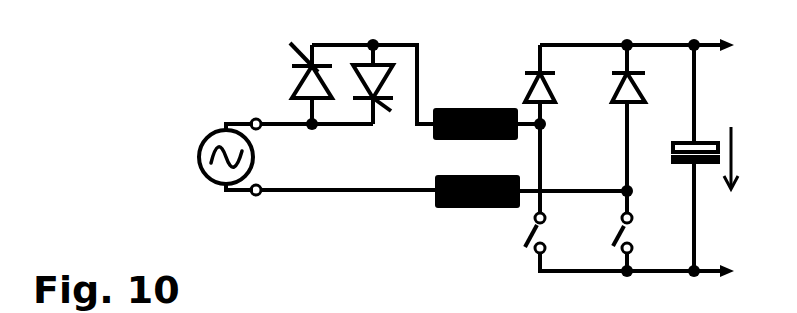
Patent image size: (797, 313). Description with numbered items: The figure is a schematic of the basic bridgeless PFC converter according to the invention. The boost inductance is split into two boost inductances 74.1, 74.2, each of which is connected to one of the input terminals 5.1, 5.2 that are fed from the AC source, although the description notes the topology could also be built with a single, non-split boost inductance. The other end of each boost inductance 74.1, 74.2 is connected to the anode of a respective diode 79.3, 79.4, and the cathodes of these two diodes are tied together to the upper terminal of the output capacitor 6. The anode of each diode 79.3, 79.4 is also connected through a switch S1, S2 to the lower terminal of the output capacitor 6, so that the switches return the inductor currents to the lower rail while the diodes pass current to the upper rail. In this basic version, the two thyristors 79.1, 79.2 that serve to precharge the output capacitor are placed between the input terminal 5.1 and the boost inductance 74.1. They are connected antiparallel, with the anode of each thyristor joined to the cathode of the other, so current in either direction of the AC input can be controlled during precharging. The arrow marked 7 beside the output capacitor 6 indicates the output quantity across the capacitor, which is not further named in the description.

The input terminal 5.1 is at (248, 117).
The input terminal 5.2 is at (250, 197).
The thyristor 79.1 is at (293, 88).
The thyristor 79.2 is at (368, 65).
The diode 79.3 is at (530, 85).
The diode 79.4 is at (640, 88).
The boost inductance 74.1 is at (488, 110).
The boost inductance 74.2 is at (508, 175).
The output capacitor 6 is at (703, 138).
The output voltage 7 is at (732, 148).
The switch S1 is at (543, 232).
The switch S2 is at (630, 232).